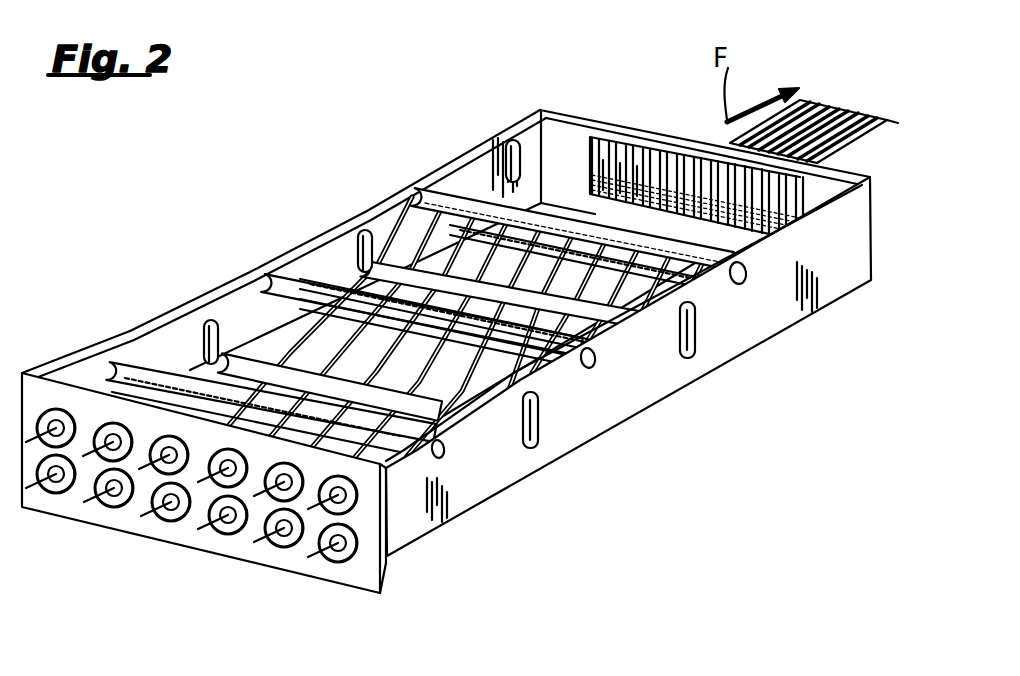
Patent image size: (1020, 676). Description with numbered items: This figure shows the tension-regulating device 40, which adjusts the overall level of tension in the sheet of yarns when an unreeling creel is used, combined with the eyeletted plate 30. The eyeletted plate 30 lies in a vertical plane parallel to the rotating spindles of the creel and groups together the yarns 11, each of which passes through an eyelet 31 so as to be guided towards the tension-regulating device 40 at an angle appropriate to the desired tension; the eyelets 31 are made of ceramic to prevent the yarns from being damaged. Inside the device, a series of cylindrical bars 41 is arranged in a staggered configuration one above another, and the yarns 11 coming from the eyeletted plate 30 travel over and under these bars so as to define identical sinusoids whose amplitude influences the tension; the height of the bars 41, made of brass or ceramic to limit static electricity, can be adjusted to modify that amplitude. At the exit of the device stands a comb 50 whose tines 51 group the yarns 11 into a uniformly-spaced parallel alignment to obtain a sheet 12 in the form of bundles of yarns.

The yarns 11 is at (90, 478).
The sheet 12 is at (832, 105).
The eyeletted plate 30 is at (166, 525).
The eyelet 31 is at (337, 560).
The tension-regulating device 40 is at (446, 344).
The cylindrical bars 41 is at (417, 197).
The comb 50 is at (654, 153).
The tines 51 is at (588, 153).